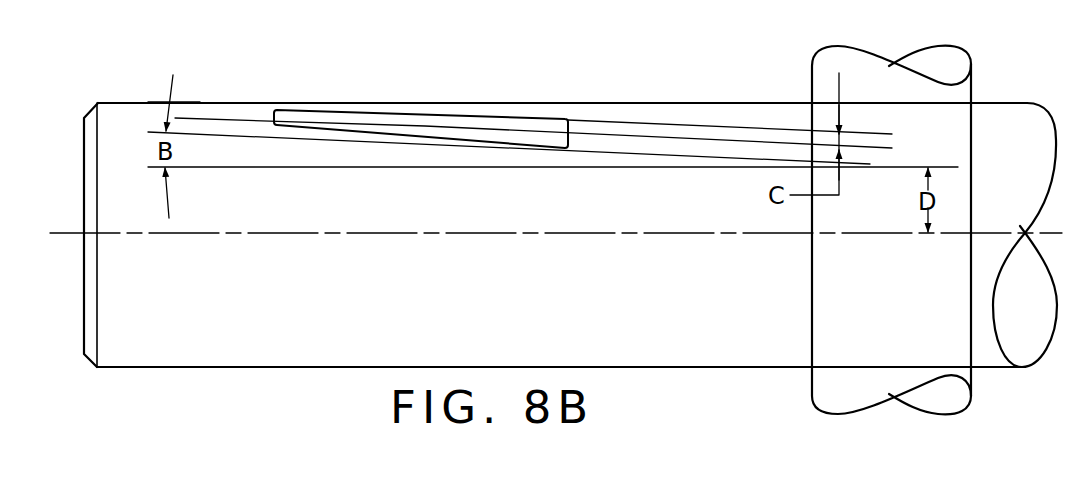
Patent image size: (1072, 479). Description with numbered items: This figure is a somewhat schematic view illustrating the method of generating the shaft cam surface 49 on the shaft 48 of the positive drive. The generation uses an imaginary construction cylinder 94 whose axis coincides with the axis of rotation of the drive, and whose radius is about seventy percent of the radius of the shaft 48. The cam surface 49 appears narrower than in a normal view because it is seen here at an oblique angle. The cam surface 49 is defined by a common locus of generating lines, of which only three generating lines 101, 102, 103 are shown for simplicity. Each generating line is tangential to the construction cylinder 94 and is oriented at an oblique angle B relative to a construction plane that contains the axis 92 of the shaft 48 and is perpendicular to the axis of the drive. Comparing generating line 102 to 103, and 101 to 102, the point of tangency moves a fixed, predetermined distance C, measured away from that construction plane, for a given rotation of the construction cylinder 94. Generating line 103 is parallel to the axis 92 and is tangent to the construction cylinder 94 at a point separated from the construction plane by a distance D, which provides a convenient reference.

The shaft 48 is at (703, 112).
The shaft cam surface 49 is at (472, 127).
The axis of the shaft 92 is at (659, 235).
The construction cylinder 94 is at (973, 128).
The generating line 101 is at (675, 127).
The generating line 102 is at (540, 137).
The generating line 103 is at (357, 140).